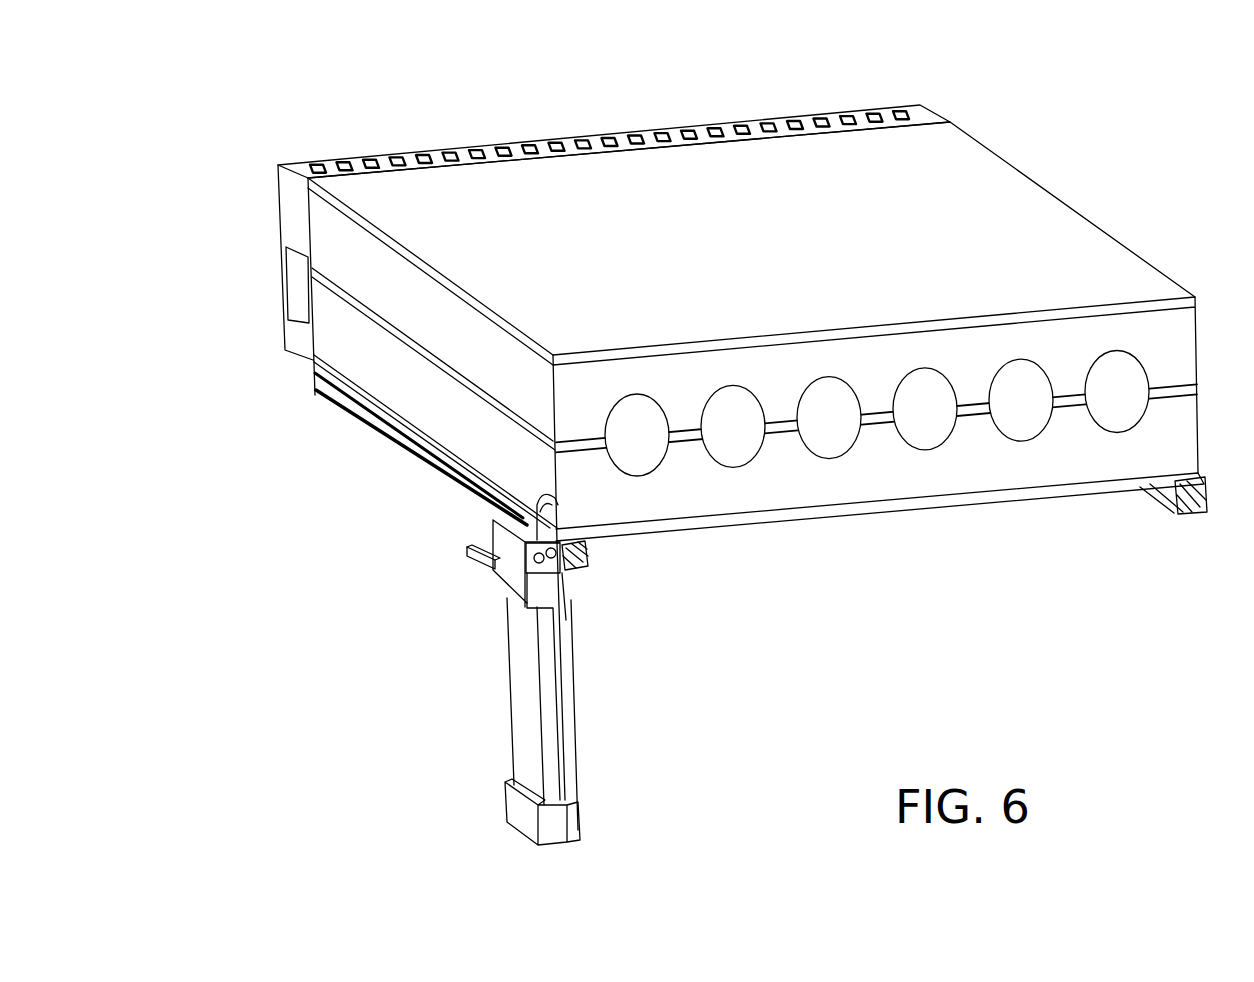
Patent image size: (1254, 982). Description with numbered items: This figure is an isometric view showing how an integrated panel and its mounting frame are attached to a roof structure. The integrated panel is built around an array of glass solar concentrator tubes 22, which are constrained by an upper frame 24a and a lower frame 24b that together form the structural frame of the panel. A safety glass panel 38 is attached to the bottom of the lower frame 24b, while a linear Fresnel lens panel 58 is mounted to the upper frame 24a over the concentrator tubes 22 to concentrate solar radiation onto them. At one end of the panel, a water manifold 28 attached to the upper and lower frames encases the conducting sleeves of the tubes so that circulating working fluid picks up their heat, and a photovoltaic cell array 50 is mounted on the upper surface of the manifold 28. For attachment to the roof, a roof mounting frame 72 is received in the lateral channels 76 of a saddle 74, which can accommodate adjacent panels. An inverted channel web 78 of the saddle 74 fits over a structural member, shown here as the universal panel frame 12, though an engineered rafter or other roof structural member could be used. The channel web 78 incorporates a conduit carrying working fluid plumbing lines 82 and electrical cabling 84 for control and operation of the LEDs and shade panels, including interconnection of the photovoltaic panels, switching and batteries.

The photovoltaic cell array 50 is at (298, 163).
The linear Fresnel lens panel 58 is at (958, 203).
The water manifold 28 is at (293, 210).
The upper frame 24a is at (397, 283).
The lower frame 24b is at (362, 355).
The roof mounting frame 72 is at (400, 450).
The inverted channel web 78 is at (527, 522).
The saddle 74 is at (468, 545).
The lateral channels 76 is at (488, 578).
The universal panel frame 12 is at (515, 795).
The glass solar concentrator tubes 22 is at (646, 442).
The safety glass panel 38 is at (862, 508).
The electrical cabling 84 is at (562, 573).
The working fluid plumbing lines 82 is at (567, 598).